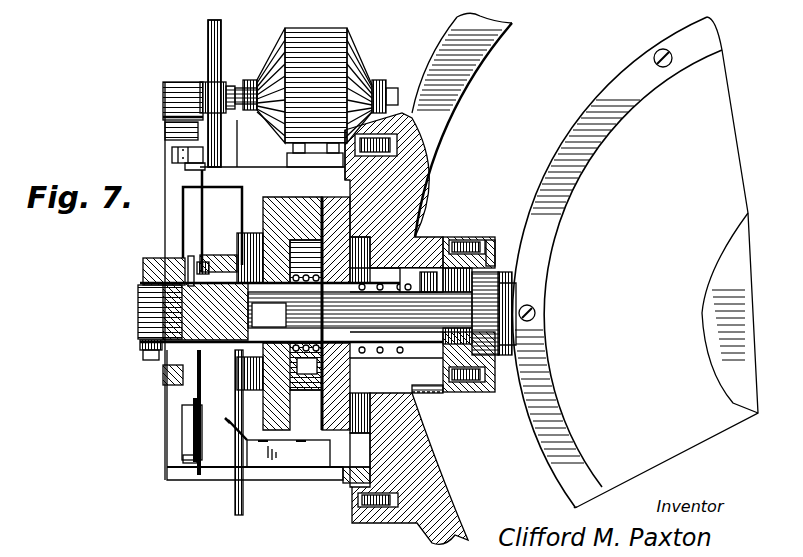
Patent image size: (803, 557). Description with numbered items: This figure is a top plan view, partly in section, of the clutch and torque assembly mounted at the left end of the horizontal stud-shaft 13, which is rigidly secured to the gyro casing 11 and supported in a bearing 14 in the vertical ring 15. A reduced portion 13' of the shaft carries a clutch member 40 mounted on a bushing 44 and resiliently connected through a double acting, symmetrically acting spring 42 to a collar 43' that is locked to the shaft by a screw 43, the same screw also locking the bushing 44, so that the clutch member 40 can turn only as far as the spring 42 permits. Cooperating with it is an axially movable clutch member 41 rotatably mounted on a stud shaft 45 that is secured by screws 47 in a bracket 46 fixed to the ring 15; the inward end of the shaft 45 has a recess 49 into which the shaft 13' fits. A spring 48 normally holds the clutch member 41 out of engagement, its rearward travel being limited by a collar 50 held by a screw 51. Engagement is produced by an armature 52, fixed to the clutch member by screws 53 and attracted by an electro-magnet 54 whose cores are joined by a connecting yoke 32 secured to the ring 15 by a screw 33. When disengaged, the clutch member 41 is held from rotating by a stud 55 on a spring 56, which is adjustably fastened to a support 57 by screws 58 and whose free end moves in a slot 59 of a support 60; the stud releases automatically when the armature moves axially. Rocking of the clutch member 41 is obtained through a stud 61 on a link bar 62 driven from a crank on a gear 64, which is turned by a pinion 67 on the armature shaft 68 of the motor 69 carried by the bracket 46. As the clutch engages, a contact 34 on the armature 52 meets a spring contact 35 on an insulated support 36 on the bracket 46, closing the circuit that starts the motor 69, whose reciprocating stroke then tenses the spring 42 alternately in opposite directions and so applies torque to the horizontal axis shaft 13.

The gyro casing 11 is at (635, 262).
The stud-shaft 13 is at (521, 305).
The reduced portion of shaft 13' is at (428, 400).
The bearings 14 is at (450, 393).
The vertical ring 15 is at (478, 60).
The connecting yoke 32 is at (477, 238).
The screw 33 is at (494, 245).
The contact 34 is at (180, 470).
The spring contact 35 is at (240, 442).
The insulated support 36 is at (300, 457).
The clutch member 40 is at (352, 240).
The axially movable clutch member 41 is at (268, 230).
The double acting spring 42 is at (406, 268).
The screw 43 is at (454, 268).
The collar 43' is at (447, 252).
The bushing 44 is at (402, 192).
The stud shaft 45 is at (157, 305).
The bracket 46 is at (180, 420).
The screws 47 is at (165, 378).
The spring 48 is at (306, 315).
The recess 49 is at (360, 310).
The collar 50 is at (165, 258).
The screw 51 is at (191, 258).
The armature 52 is at (204, 262).
The screws 53 is at (216, 258).
The electro-magnet 54 is at (358, 410).
The stud 55 is at (140, 343).
The spring 56 is at (167, 133).
The support 57 is at (183, 452).
The screws 58 is at (193, 428).
The slot 59 is at (172, 157).
The support 60 is at (188, 170).
The stud 61 is at (145, 356).
The link bar 62 is at (170, 95).
The gear 64 is at (207, 32).
The pinion 67 is at (205, 84).
The armature shaft 68 is at (242, 88).
The motor 69 is at (347, 40).